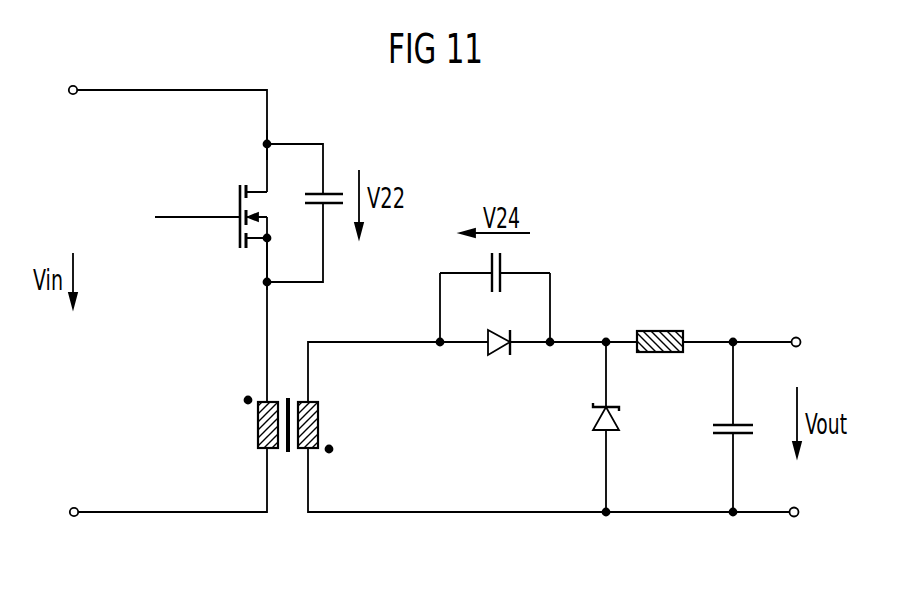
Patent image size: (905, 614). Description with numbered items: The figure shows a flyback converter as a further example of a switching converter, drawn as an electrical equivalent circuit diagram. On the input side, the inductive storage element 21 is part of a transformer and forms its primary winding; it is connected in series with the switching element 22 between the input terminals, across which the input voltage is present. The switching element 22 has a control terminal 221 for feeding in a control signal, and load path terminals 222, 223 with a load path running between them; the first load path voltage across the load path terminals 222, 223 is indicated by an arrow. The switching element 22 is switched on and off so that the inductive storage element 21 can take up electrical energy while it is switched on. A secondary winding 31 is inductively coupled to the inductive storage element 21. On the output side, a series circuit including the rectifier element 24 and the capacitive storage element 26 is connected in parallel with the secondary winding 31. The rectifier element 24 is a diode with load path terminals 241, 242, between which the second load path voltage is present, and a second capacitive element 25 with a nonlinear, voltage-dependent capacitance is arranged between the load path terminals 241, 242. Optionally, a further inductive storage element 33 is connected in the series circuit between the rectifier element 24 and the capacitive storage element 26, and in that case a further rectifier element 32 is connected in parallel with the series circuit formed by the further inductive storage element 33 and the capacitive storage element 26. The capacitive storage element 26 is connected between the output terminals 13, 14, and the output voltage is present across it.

The output terminal 13 is at (797, 336).
The output terminal 14 is at (794, 518).
The inductive storage element 21 is at (258, 426).
The switching element 22 is at (238, 194).
The control terminal 221 is at (235, 221).
The load path terminal 222 is at (264, 166).
The load path terminal 223 is at (265, 260).
The rectifier element 24 is at (499, 358).
The load path terminal 241 is at (438, 339).
The load path terminal 242 is at (553, 339).
The second capacitive element 25 is at (490, 267).
The capacitive storage element 26 is at (717, 424).
The secondary winding 31 is at (292, 456).
The further rectifier element 32 is at (592, 418).
The further inductive storage element 33 is at (659, 330).